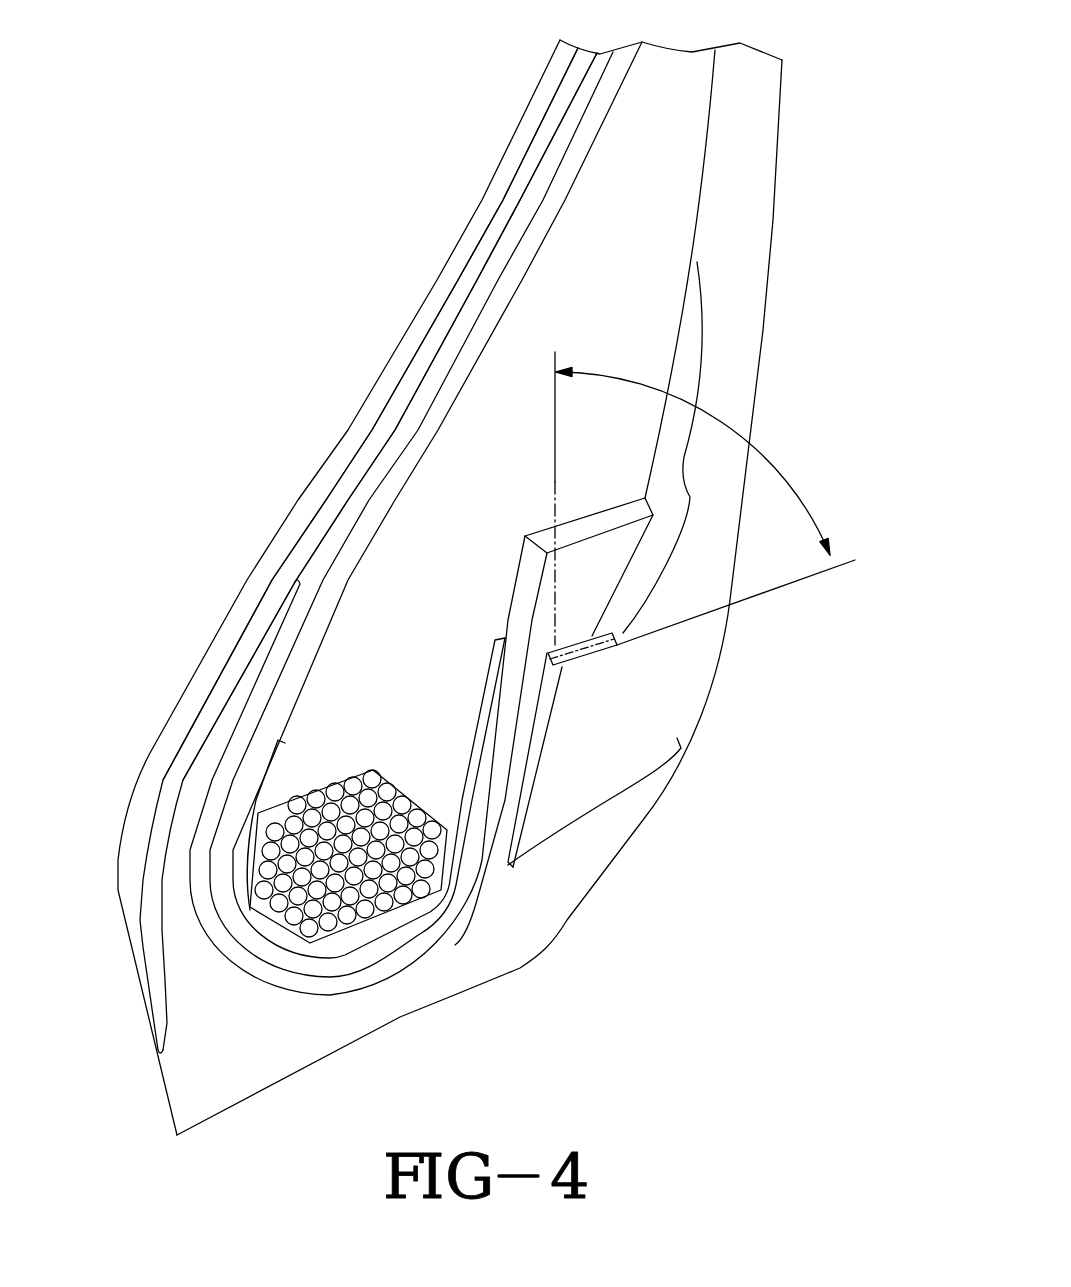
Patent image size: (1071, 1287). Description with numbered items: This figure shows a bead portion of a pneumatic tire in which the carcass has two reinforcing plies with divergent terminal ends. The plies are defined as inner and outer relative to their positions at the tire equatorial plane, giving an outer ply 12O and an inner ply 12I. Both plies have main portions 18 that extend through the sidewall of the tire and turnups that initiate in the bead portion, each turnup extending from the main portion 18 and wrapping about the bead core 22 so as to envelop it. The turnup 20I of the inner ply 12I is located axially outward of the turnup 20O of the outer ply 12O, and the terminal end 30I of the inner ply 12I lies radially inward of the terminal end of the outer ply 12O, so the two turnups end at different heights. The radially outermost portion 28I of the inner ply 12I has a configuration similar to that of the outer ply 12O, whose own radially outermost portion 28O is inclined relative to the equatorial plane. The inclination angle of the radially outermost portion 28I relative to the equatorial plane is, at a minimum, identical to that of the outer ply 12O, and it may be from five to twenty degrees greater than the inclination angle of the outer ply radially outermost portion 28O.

The outer ply 12O is at (585, 130).
The inner ply 12I is at (540, 192).
The main portion 18 is at (425, 397).
The outer ply radially outermost portion 28O is at (588, 530).
The radially outermost portion of the inner ply 28I is at (583, 658).
The turnup of the outer ply 20O is at (528, 583).
The turnup of the inner ply 20I is at (517, 795).
The terminal end of the inner ply 30I is at (620, 648).
The bead core 22 is at (263, 873).